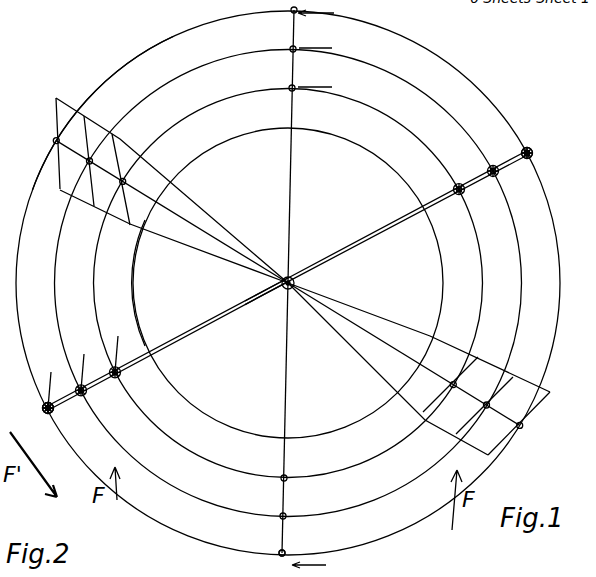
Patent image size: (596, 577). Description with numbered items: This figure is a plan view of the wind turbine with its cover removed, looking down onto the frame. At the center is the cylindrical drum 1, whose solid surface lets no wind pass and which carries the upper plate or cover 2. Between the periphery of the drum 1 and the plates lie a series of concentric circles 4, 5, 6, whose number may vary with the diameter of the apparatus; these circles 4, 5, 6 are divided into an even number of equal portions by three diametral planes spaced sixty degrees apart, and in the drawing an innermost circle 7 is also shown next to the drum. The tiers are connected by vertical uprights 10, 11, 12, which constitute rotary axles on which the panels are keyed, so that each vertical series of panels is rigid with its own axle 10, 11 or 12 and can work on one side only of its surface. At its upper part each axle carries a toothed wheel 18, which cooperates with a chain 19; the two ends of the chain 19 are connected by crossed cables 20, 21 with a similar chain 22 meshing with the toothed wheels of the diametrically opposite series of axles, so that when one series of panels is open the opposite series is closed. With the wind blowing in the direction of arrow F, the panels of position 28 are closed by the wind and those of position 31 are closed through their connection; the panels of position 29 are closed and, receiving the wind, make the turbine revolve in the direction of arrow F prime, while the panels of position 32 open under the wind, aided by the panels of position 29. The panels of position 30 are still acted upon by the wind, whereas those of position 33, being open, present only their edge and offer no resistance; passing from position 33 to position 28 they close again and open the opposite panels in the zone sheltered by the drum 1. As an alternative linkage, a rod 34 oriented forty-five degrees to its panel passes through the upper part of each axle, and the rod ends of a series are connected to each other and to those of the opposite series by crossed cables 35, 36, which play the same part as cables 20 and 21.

The cylindrical drum 1 is at (442, 294).
The upper plate or cover 2 is at (314, 288).
The concentric circle 4 is at (288, 283).
The concentric circle 5 is at (288, 283).
The concentric circle 6 is at (288, 283).
The inner ring 7 is at (139, 283).
The vertical upright 10 is at (533, 154).
The vertical upright 11 is at (498, 174).
The vertical upright 12 is at (463, 195).
The toothed wheel 18 is at (48, 410).
The chain 19 is at (138, 363).
The crossed cable 20 is at (252, 299).
The crossed cable 21 is at (262, 296).
The chain 22 is at (483, 171).
The panel position 28 is at (295, 557).
The panel position 29 is at (523, 426).
The panel position 30 is at (537, 143).
The panel position 31 is at (102, 109).
The panel position 32 is at (159, 203).
The panel position 33 is at (34, 397).
The rod 34 is at (62, 183).
The crossed cable 35 is at (236, 240).
The crossed cable 36 is at (240, 266).